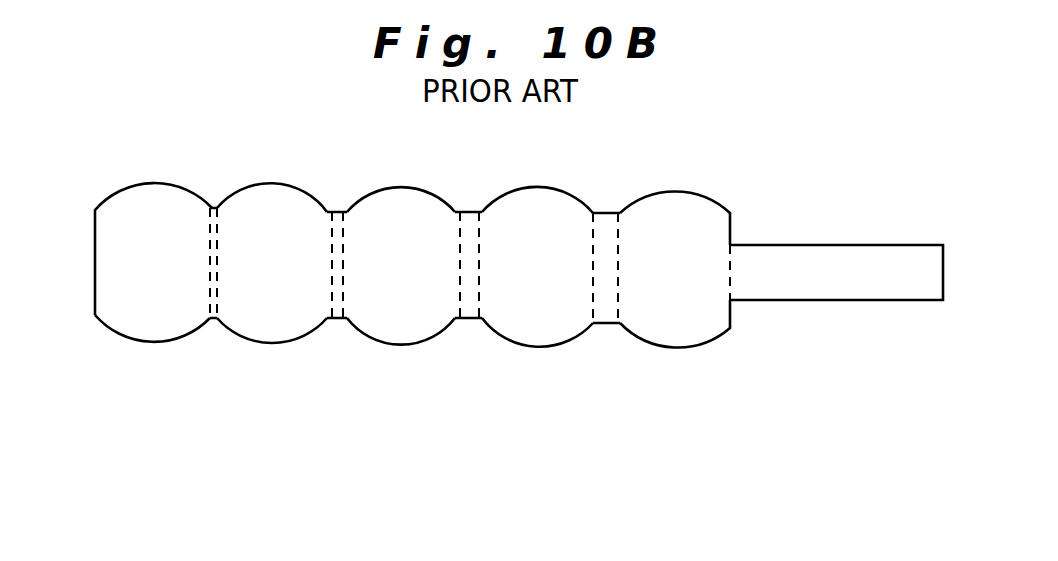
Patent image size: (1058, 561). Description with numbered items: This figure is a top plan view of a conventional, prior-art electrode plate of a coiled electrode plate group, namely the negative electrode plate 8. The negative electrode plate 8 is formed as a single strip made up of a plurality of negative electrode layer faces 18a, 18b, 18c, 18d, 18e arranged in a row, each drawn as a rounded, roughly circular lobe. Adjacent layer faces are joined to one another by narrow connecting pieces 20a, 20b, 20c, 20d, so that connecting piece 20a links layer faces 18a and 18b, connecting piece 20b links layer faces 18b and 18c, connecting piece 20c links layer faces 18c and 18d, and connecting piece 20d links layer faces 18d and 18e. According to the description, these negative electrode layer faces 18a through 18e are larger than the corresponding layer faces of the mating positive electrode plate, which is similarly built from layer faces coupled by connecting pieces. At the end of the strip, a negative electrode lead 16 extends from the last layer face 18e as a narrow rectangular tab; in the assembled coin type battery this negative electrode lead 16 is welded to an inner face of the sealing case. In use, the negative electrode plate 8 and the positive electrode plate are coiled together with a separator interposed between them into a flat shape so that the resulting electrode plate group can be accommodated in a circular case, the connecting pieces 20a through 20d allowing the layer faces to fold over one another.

The negative electrode plate 8 is at (152, 360).
The negative electrode lead 16 is at (852, 288).
The negative electrode layer face 18a is at (150, 215).
The negative electrode layer face 18b is at (262, 215).
The negative electrode layer face 18c is at (402, 218).
The negative electrode layer face 18d is at (537, 218).
The negative electrode layer face 18e is at (677, 215).
The connecting piece 20a is at (217, 287).
The connecting piece 20b is at (343, 287).
The connecting piece 20c is at (479, 287).
The connecting piece 20d is at (618, 297).